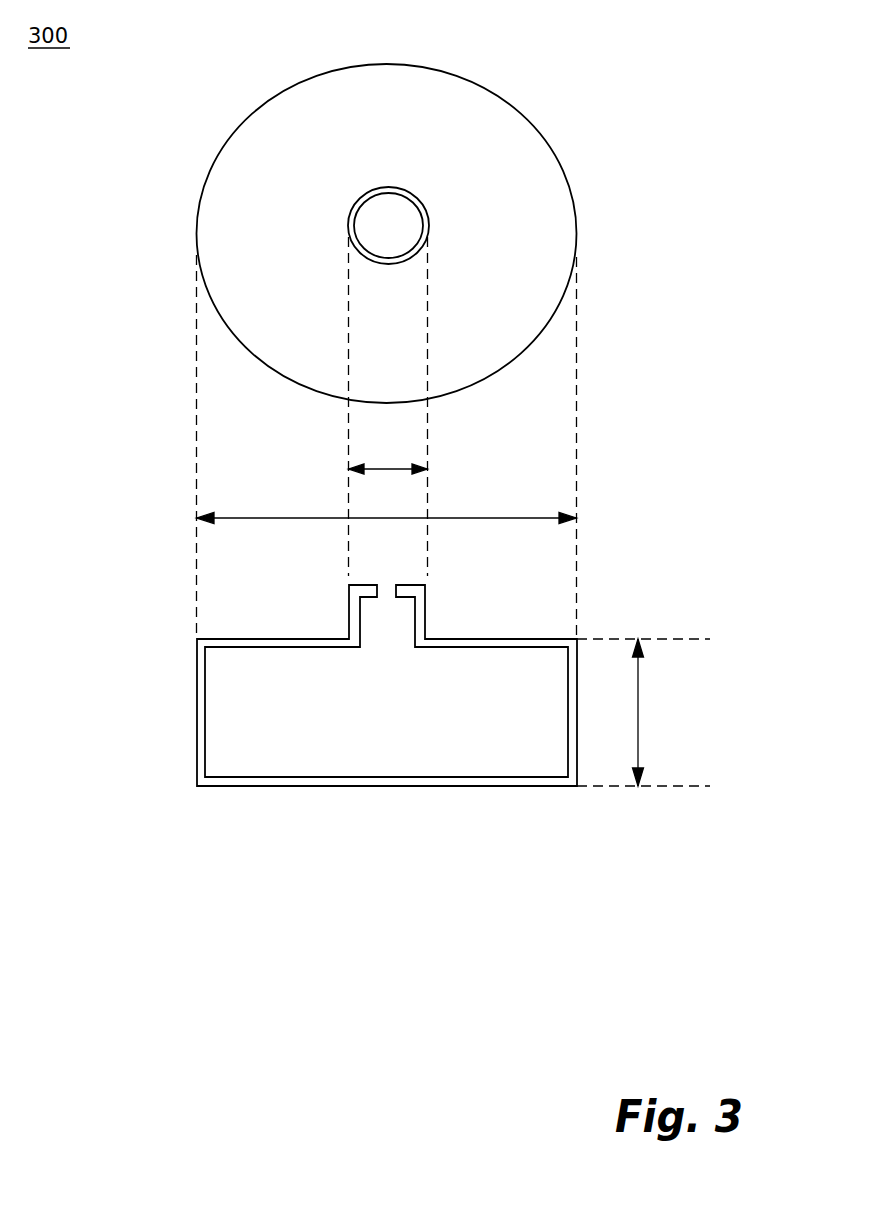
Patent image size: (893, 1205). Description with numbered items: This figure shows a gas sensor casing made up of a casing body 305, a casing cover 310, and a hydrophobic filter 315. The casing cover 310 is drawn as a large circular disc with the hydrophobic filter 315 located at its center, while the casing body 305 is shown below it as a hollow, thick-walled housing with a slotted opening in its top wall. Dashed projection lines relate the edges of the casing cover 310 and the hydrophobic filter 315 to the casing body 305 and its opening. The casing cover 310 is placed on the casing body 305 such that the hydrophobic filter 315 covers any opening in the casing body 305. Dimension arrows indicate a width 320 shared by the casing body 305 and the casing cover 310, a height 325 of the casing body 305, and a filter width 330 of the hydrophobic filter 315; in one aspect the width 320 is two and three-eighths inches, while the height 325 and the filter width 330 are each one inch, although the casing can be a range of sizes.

The casing body 305 is at (197, 725).
The casing cover 310 is at (561, 300).
The hydrophobic filter 315 is at (397, 210).
The width 320 is at (505, 518).
The height 325 is at (638, 682).
The filter width 330 is at (390, 469).